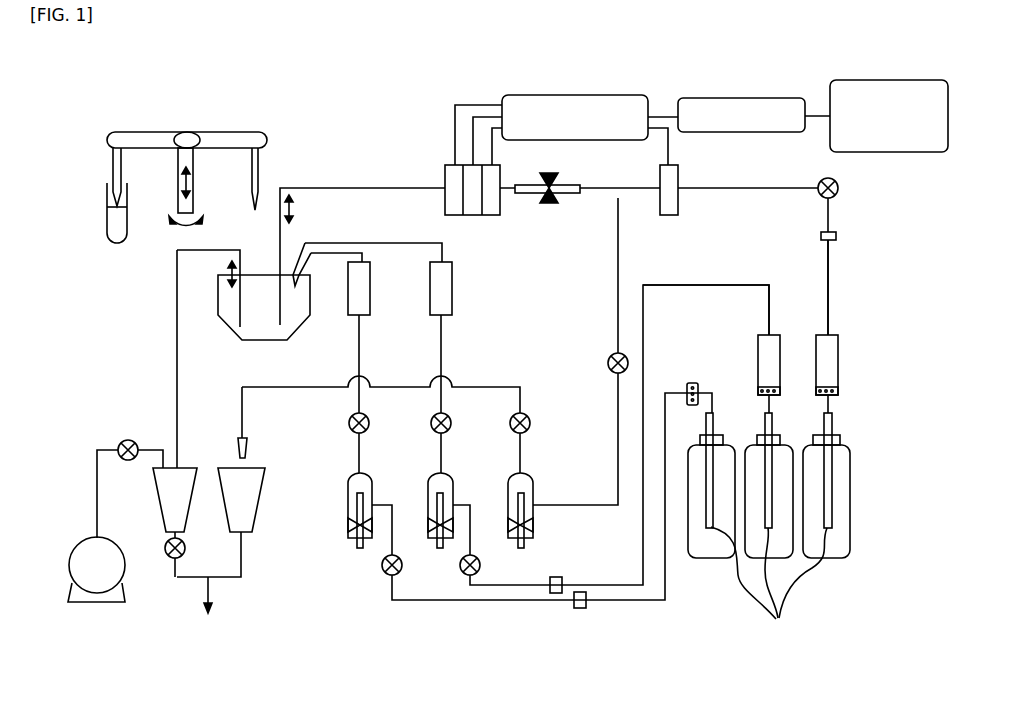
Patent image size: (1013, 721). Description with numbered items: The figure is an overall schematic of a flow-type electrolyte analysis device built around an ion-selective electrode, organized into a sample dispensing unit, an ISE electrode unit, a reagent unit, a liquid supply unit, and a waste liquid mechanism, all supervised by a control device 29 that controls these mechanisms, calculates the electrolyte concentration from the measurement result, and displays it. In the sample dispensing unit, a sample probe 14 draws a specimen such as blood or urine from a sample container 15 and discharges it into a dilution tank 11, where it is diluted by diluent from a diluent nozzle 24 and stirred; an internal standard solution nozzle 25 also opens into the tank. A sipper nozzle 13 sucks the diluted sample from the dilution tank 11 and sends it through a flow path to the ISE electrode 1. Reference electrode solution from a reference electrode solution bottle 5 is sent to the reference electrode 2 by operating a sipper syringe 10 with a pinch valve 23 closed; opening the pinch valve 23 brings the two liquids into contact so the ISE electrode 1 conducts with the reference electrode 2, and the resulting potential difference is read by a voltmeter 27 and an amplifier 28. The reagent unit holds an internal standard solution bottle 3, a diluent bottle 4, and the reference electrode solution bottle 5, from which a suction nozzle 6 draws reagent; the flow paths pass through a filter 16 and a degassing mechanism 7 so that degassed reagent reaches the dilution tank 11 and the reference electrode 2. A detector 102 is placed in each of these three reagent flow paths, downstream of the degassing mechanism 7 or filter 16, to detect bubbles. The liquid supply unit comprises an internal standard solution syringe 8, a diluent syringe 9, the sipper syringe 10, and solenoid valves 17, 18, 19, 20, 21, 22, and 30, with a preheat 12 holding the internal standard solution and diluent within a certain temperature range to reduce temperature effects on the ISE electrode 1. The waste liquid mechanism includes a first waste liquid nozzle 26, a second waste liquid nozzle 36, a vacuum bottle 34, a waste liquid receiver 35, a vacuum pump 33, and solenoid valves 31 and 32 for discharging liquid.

The ISE electrode 1 is at (443, 185).
The reference electrode 2 is at (680, 172).
The internal standard solution bottle 3 is at (731, 449).
The diluent bottle 4 is at (784, 449).
The reference electrode solution bottle 5 is at (851, 495).
The suction nozzle 6 is at (769, 584).
The degassing mechanism 7 is at (823, 335).
The internal standard solution syringe 8 is at (358, 549).
The diluent syringe 9 is at (440, 549).
The sipper syringe 10 is at (521, 549).
The dilution tank 11 is at (226, 323).
The preheat 12 is at (431, 293).
The sipper nozzle 13 is at (283, 232).
The sample probe 14 is at (256, 134).
The sample container 15 is at (107, 228).
The filter 16 is at (757, 392).
The solenoid valve 17 is at (512, 429).
The solenoid valve 18 is at (433, 429).
The solenoid valve 19 is at (351, 428).
The solenoid valve 20 is at (470, 575).
The solenoid valve 21 is at (838, 182).
The solenoid valve 22 is at (608, 361).
The pinch valve 23 is at (548, 203).
The diluent nozzle 24 is at (283, 262).
The internal standard solution nozzle 25 is at (297, 287).
The first waste liquid nozzle 26 is at (232, 253).
The voltmeter 27 is at (568, 95).
The amplifier 28 is at (700, 98).
The control device 29 is at (862, 80).
The solenoid valve 30 is at (392, 575).
The solenoid valve 31 is at (128, 440).
The solenoid valve 32 is at (170, 558).
The vacuum pump 33 is at (70, 573).
The vacuum bottle 34 is at (187, 520).
The waste liquid receiver 35 is at (257, 515).
The second waste liquid nozzle 36 is at (245, 418).
The detector 102 is at (837, 236).